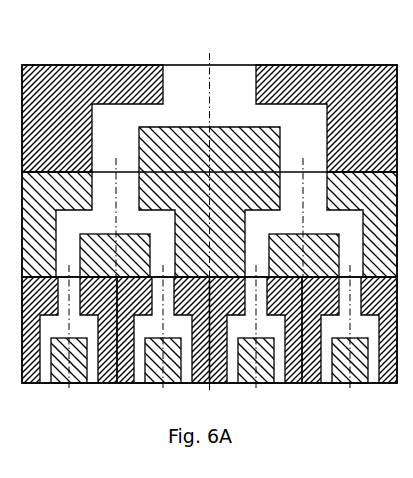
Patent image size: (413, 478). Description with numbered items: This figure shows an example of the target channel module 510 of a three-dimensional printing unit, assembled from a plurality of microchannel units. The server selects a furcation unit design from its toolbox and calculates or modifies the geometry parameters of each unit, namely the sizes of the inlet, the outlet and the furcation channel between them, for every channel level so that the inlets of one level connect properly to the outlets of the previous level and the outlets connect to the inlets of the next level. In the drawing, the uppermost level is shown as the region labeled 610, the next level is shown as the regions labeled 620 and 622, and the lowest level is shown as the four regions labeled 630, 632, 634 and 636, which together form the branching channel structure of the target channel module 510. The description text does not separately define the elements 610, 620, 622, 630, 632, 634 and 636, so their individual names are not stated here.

The target channel module 510 is at (326, 60).
The top conductive layer 610 is at (74, 92).
The intermediate conductive layer 620 is at (62, 194).
The central via structure 622 is at (259, 194).
The first gate structure 630 is at (59, 300).
The second gate structure 632 is at (159, 300).
The third gate structure 634 is at (251, 300).
The fourth gate structure 636 is at (345, 300).